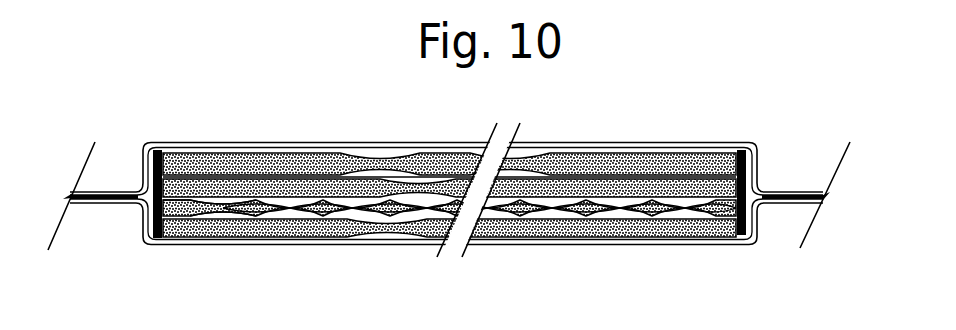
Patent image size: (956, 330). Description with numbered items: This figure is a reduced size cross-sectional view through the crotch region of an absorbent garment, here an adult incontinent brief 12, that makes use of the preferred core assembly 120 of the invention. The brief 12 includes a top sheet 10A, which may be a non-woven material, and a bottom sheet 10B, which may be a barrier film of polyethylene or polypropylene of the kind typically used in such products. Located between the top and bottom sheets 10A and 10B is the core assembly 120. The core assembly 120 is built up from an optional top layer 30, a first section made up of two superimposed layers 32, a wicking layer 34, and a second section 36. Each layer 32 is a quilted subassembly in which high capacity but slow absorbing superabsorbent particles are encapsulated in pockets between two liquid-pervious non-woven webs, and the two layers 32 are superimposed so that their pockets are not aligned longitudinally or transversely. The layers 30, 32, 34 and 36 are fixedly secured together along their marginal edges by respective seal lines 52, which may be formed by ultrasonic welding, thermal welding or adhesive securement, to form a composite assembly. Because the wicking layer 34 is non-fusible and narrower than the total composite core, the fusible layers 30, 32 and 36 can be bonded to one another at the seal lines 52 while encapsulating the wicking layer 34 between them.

The adult incontinent brief 12 is at (449, 176).
The core assembly 120 is at (753, 169).
The top sheet 10A is at (340, 142).
The bottom sheet 10B is at (302, 245).
The top layer 30 is at (243, 150).
The layer of the first section 32 is at (393, 178).
The wicking layer 34 is at (542, 213).
The second section 36 is at (627, 233).
The seal lines 52 is at (153, 183).